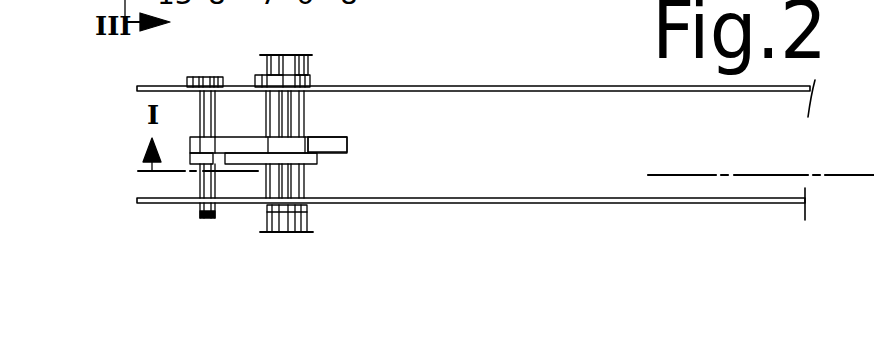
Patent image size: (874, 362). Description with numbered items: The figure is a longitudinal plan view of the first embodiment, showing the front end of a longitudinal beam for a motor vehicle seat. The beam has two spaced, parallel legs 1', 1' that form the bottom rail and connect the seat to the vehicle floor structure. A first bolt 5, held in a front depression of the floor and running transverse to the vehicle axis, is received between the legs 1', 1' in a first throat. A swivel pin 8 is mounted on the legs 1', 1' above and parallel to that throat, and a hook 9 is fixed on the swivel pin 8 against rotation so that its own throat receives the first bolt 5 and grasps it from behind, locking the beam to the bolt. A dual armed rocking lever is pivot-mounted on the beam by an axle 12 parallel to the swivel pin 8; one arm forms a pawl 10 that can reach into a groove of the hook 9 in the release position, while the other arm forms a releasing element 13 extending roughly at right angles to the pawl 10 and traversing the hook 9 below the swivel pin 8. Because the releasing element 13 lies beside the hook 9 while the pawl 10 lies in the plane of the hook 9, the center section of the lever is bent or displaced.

The legs 1' is at (476, 170).
The first bolt 5 is at (262, 57).
The swivel pin 8 is at (283, 117).
The hook 9 is at (332, 142).
The pawl 10 is at (253, 140).
The axle 12 is at (208, 222).
The releasing element 13 is at (317, 155).